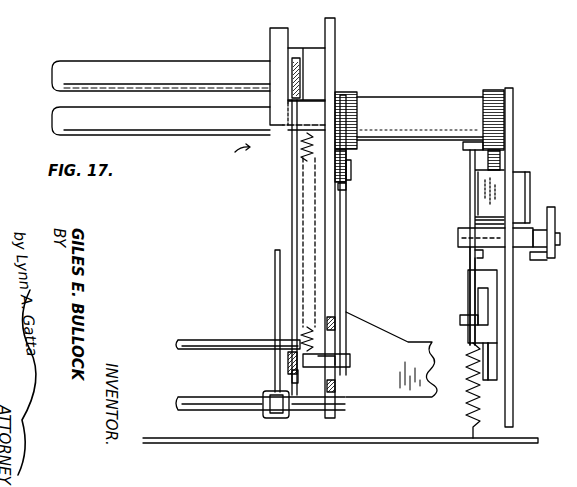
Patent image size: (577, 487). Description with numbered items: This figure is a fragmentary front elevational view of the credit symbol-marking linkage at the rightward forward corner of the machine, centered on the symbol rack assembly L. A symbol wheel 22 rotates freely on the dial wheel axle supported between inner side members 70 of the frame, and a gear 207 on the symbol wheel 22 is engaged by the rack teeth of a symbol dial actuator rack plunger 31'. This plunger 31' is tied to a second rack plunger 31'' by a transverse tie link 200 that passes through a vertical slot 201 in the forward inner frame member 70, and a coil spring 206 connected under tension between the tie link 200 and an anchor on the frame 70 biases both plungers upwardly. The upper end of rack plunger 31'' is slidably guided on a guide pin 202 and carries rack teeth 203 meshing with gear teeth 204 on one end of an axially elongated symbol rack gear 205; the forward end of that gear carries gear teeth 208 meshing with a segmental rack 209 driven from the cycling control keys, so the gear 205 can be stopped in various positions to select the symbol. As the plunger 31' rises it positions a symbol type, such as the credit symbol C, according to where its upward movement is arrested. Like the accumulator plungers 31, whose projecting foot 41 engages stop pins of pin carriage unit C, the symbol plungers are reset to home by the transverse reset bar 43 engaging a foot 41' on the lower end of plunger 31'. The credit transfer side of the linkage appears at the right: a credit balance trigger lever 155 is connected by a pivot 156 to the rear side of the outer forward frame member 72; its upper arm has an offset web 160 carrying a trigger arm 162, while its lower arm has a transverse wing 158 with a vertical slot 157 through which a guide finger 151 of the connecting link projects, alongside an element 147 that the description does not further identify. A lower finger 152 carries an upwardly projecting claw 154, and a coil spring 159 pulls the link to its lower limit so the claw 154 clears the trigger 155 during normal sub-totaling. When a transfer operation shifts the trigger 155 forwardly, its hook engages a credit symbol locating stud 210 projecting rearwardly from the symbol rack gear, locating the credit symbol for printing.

The symbol wheel 22 is at (258, 76).
The pin carriage unit C is at (280, 77).
The symbol rack assembly L is at (235, 153).
The gear on symbol dial wheel 207 is at (294, 46).
The gear teeth 204 is at (355, 91).
The symbol rack gear 205 is at (452, 98).
The gear teeth 208 is at (500, 91).
The outer forward frame member 72 is at (513, 415).
The credit symbol locating stud 210 is at (463, 147).
The segmental rack 209 is at (494, 162).
The credit balance trigger lever 155 is at (468, 211).
The offset web 160 is at (527, 183).
The trigger arm 162 is at (530, 199).
The pivot 156 is at (476, 258).
The rod 147 is at (472, 269).
The wing 158 is at (497, 331).
The vertical slot 157 is at (480, 295).
The guide finger 151 is at (478, 312).
The claw 154 is at (489, 359).
The finger 152 is at (492, 379).
The coil spring 159 is at (457, 408).
The coil spring 206 is at (300, 151).
The guide pin 202 is at (351, 171).
The rack teeth 203 is at (345, 188).
The symbol dial actuator rack plunger 31' is at (274, 247).
The rack plunger 31'' is at (363, 235).
The plunger 31 is at (256, 321).
The transverse bar 43 is at (220, 340).
The projecting foot 41 is at (263, 367).
The foot 41' is at (261, 396).
The transverse tie link 200 is at (308, 368).
The vertical slot 201 is at (323, 368).
The inner side member 70 is at (340, 400).